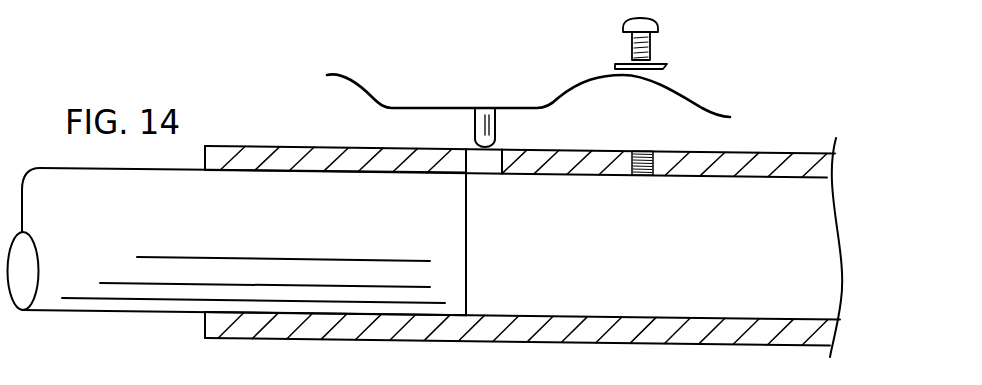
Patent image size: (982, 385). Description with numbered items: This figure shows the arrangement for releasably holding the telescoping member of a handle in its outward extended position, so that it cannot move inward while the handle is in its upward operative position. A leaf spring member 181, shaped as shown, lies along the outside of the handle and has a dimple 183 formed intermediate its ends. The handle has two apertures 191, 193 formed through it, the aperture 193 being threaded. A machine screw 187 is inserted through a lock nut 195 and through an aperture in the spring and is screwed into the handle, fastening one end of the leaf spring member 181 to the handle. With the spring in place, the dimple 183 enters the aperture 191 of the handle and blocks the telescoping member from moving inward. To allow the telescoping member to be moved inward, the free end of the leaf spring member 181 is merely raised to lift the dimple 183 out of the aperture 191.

The leaf spring member 181 is at (715, 110).
The dimple 183 is at (475, 129).
The machine screw 187 is at (652, 45).
The aperture 191 is at (491, 150).
The aperture 193 is at (640, 150).
The lock nut 195 is at (667, 63).